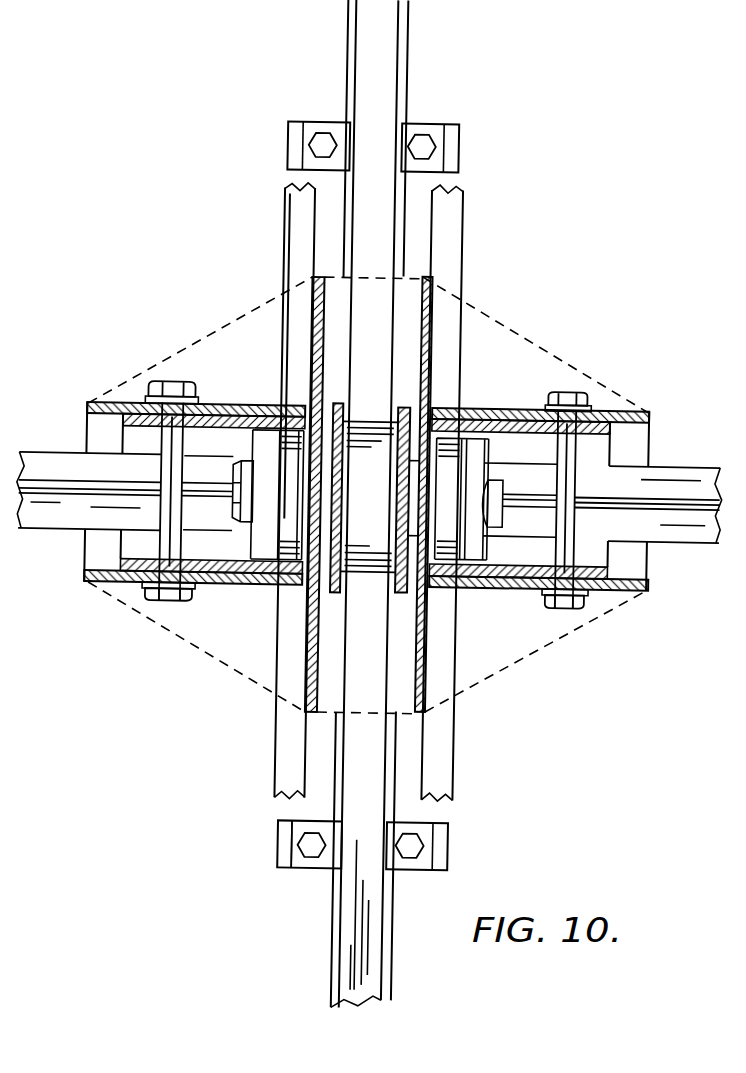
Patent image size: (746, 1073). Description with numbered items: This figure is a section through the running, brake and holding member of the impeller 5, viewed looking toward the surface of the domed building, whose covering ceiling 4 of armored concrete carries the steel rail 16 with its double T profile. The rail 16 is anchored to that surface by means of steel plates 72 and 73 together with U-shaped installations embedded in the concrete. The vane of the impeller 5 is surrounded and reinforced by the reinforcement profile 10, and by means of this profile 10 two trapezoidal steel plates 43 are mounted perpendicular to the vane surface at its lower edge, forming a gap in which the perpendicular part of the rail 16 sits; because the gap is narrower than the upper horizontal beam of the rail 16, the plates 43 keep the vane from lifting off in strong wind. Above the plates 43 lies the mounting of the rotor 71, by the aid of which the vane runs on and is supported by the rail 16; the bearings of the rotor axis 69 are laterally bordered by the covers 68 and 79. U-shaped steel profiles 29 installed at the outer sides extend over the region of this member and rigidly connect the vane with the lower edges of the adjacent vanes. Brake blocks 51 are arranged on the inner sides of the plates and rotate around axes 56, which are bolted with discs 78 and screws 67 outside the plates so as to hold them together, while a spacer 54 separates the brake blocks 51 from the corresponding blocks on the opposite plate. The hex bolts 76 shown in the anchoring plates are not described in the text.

The covering ceiling 4 is at (104, 405).
The impeller 5 is at (687, 465).
The reinforcement profile 10 is at (42, 511).
The steel rail 16 is at (356, 13).
The U-shaped profile 29 is at (290, 197).
The steel plate 43 is at (216, 613).
The brake block 51 is at (213, 408).
The spacer 54 is at (593, 551).
The axis 56 is at (165, 524).
The screw 67 is at (559, 392).
The cover 68 is at (149, 594).
The axis 69 is at (413, 501).
The rotor 71 is at (364, 410).
The steel plate 72 is at (291, 129).
The steel plate 73 is at (301, 819).
The hex bolt 76 is at (315, 141).
The disc 78 is at (596, 401).
The cover 79 is at (510, 462).